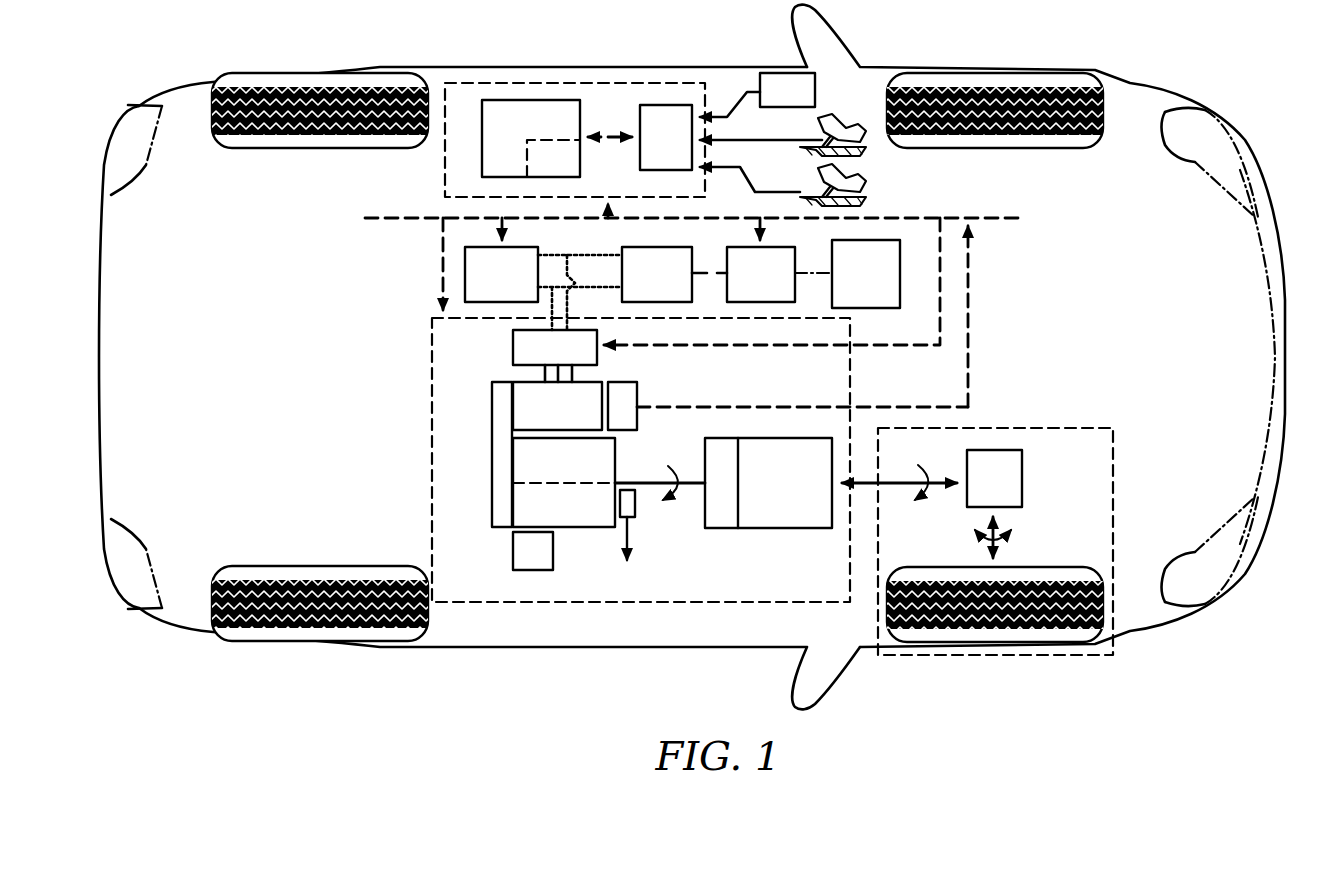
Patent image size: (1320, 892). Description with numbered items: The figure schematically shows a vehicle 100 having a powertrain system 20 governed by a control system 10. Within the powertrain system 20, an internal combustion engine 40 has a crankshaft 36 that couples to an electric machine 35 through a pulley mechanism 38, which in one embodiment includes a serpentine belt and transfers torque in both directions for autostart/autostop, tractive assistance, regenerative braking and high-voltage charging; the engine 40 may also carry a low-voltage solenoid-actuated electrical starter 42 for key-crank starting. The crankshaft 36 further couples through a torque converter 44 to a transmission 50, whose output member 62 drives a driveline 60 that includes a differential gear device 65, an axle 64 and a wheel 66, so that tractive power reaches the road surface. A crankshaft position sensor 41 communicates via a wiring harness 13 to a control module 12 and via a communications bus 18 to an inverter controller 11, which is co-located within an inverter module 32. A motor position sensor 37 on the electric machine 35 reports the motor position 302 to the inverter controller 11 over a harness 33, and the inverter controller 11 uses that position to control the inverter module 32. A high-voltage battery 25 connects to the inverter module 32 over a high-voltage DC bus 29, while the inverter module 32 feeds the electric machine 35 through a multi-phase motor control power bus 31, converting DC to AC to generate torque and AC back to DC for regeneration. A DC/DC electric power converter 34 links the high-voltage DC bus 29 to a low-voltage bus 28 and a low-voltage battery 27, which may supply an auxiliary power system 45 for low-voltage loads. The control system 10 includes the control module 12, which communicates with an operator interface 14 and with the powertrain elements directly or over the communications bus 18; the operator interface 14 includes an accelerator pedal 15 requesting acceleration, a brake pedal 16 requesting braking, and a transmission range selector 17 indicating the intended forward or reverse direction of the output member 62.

The vehicle 100 is at (692, 357).
The control system 10 is at (575, 140).
The inverter controller 11 is at (553, 158).
The control module 12 is at (557, 138).
The wiring harness 13 is at (633, 552).
The operator interface 14 is at (666, 137).
The accelerator pedal 15 is at (820, 185).
The brake pedal 16 is at (820, 135).
The transmission range selector 17 is at (757, 95).
The communications bus 18 is at (440, 210).
The powertrain system 20 is at (860, 364).
The high-voltage battery 25 is at (501, 274).
The low-voltage battery 27 is at (779, 274).
The low-voltage bus 28 is at (712, 268).
The high-voltage DC bus 29 is at (595, 284).
The multi-phase motor control power bus 31 is at (540, 374).
The inverter module 32 is at (555, 347).
The harness 33 is at (697, 485).
The DC/DC electric power converter 34 is at (657, 274).
The electric machine 35 is at (557, 406).
The crankshaft 36 is at (575, 483).
The motor position sensor 37 is at (620, 380).
The pulley mechanism 38 is at (492, 455).
The internal combustion engine 40 is at (564, 482).
The crankshaft position sensor 41 is at (640, 498).
The low-voltage solenoid-actuated electrical starter 42 is at (513, 560).
The torque converter 44 is at (723, 515).
The auxiliary power system 45 is at (866, 274).
The transmission 50 is at (768, 483).
The driveline 60 is at (1028, 418).
The output member 62 is at (866, 478).
The axle 64 is at (1010, 528).
The differential gear device 65 is at (994, 478).
The wheel 66 is at (955, 558).
The motor position 302 is at (802, 390).